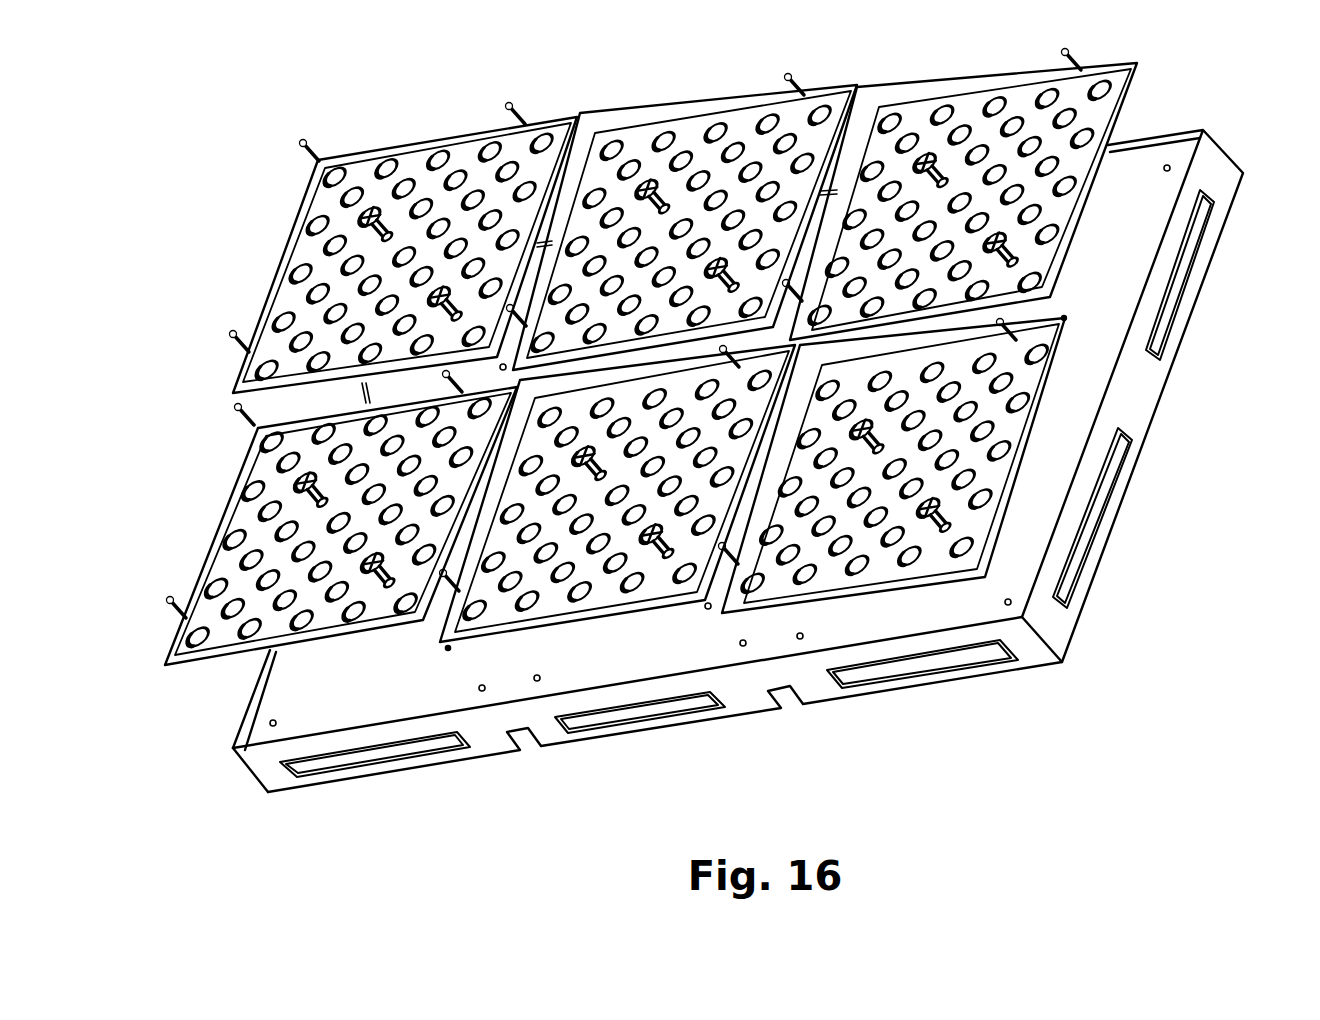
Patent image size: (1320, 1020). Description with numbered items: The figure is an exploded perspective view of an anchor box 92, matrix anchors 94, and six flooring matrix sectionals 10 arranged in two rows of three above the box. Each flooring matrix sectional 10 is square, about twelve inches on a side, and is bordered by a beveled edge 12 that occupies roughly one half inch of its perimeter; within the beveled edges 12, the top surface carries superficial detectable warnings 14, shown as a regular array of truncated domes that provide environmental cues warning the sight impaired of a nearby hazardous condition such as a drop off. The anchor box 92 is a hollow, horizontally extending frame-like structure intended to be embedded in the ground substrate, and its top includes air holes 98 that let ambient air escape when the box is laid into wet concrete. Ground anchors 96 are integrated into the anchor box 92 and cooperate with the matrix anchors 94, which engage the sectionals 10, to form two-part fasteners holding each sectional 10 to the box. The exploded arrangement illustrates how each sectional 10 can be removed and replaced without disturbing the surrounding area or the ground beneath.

The flooring matrix sectional 10 is at (405, 239).
The beveled edge 12 is at (690, 113).
The detectable warning 14 is at (383, 163).
The anchor box 92 is at (1229, 152).
The matrix anchor 94 is at (790, 78).
The ground anchor 96 is at (1169, 160).
The air hole 98 is at (1068, 317).